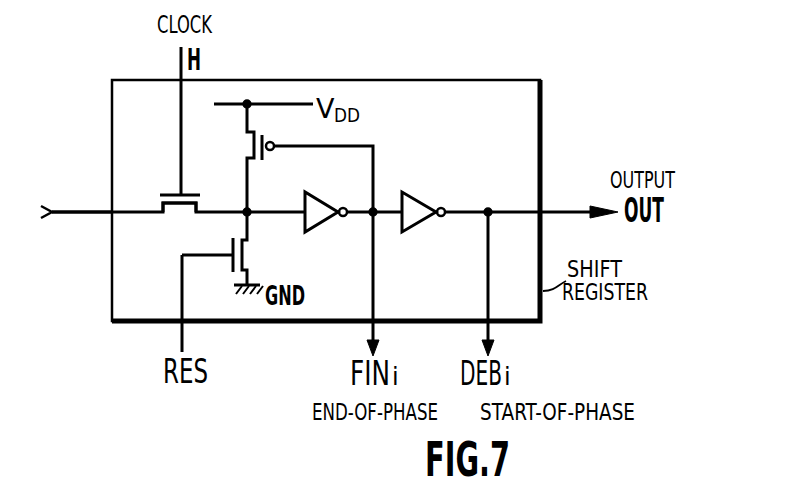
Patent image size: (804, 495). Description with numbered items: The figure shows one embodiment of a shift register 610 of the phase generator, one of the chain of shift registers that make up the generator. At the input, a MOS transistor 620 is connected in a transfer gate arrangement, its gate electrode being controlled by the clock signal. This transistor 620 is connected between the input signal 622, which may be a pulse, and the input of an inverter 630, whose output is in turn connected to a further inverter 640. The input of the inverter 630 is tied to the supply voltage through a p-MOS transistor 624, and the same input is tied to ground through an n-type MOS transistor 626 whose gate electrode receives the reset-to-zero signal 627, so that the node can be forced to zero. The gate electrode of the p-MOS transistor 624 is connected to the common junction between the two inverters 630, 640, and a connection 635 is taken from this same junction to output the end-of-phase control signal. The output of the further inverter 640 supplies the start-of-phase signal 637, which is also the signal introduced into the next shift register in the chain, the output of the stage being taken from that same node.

The shift register stage 610 is at (543, 128).
The MOS transistor 620 is at (183, 216).
The input signal 622 is at (85, 214).
The p-MOS transistor 624 is at (254, 144).
The n-type MOS transistor 626 is at (230, 258).
The reset-to-zero signal RES 627 is at (182, 329).
The inverter 630 is at (322, 234).
The connection 635 is at (372, 328).
The signal DEBi 637 is at (490, 328).
The further inverter 640 is at (428, 222).